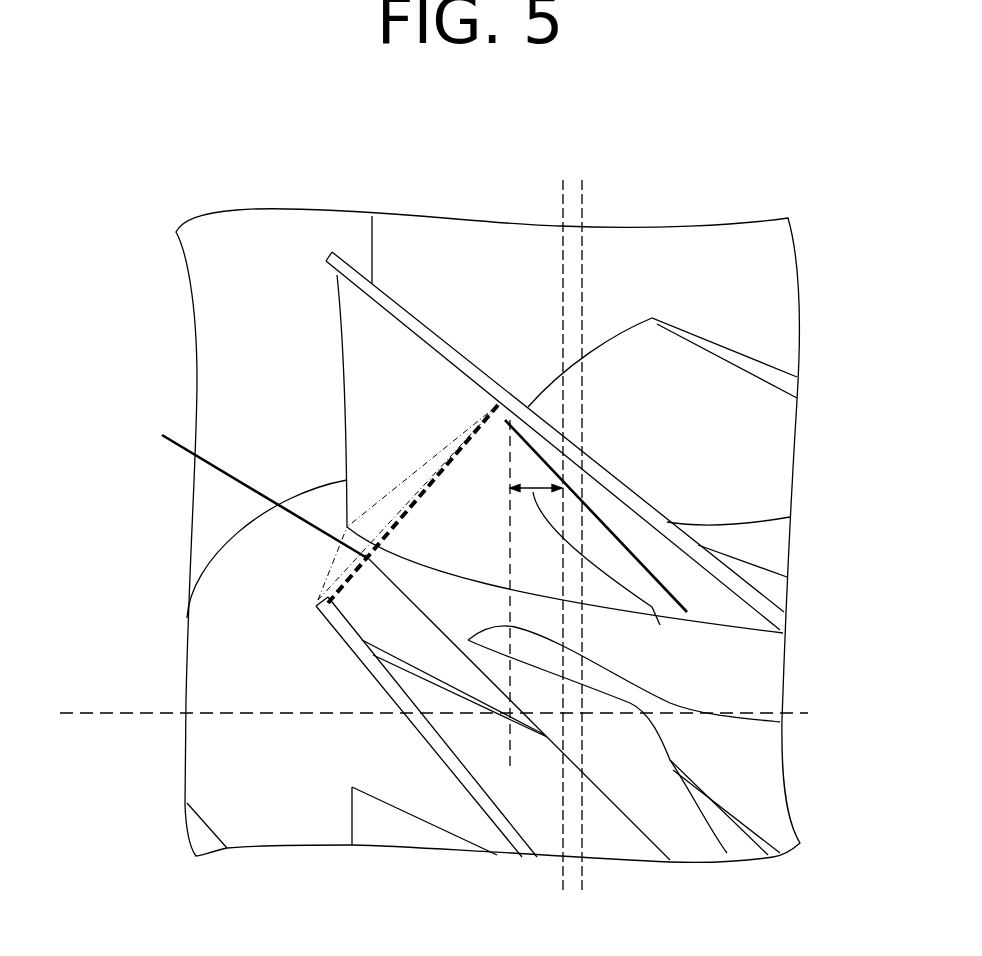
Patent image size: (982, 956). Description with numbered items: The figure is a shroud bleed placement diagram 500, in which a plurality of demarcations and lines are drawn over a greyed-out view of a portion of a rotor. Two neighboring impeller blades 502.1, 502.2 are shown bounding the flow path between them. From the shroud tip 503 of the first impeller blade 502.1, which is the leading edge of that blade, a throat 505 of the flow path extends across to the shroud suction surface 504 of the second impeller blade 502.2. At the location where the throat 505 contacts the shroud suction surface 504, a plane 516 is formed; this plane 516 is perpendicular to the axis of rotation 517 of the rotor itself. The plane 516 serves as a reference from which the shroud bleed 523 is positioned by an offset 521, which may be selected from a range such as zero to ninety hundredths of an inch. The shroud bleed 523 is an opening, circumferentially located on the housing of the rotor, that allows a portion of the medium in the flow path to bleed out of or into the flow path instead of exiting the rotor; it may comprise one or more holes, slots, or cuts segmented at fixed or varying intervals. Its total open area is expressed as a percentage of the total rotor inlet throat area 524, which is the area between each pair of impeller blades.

The shroud bleed placement diagram 500 is at (947, 146).
The impeller blade 502.1 is at (353, 657).
The impeller blade 502.2 is at (698, 545).
The shroud tip 503 is at (296, 585).
The shroud suction surface 504 is at (480, 405).
The throat 505 is at (242, 491).
The plane 516 is at (510, 767).
The axis of rotation 517 is at (116, 716).
The offset 521 is at (660, 624).
The shroud bleed 523 is at (577, 156).
The total rotor inlet throat area 524 is at (338, 513).